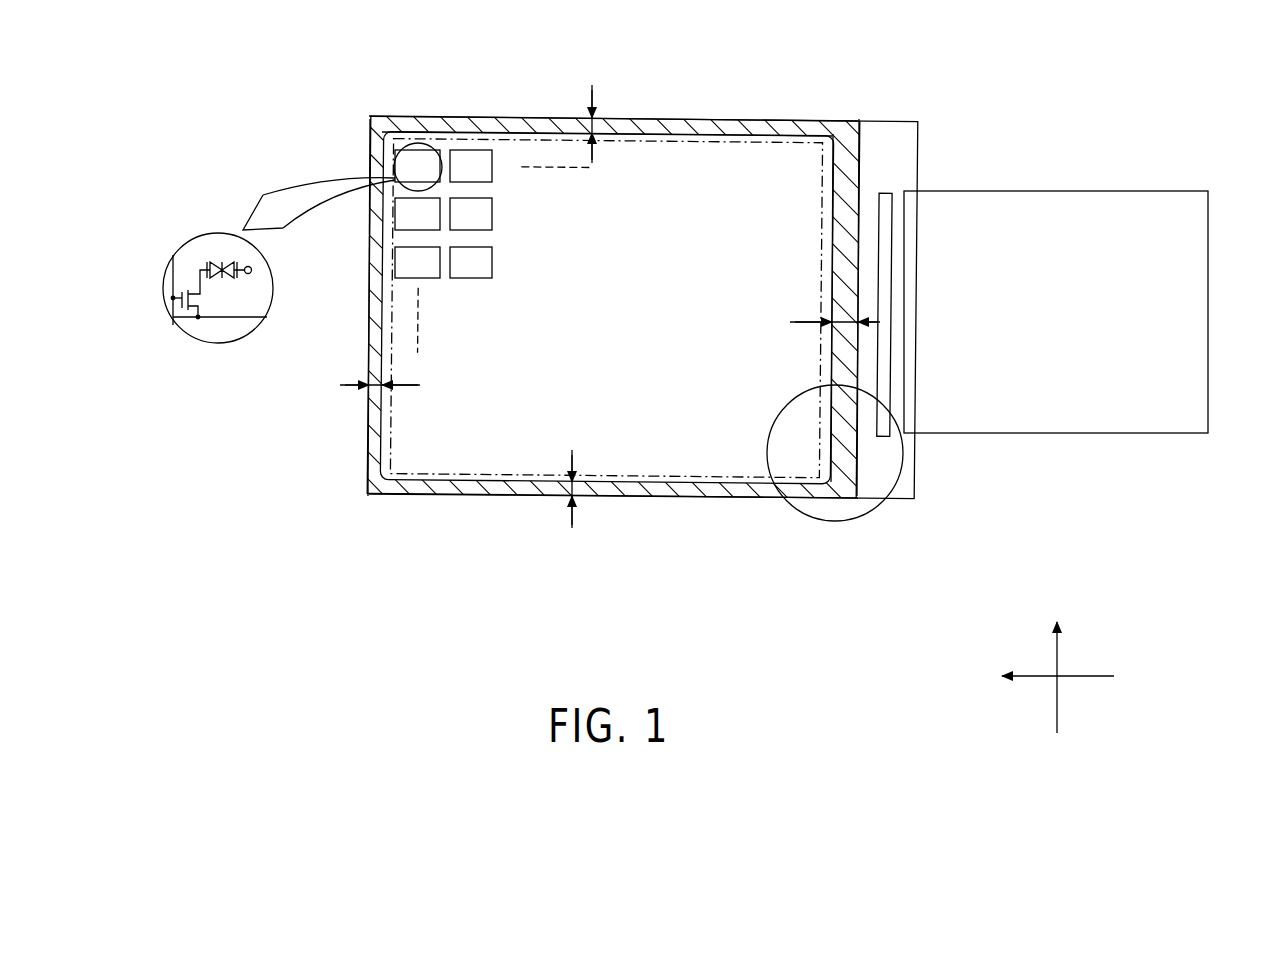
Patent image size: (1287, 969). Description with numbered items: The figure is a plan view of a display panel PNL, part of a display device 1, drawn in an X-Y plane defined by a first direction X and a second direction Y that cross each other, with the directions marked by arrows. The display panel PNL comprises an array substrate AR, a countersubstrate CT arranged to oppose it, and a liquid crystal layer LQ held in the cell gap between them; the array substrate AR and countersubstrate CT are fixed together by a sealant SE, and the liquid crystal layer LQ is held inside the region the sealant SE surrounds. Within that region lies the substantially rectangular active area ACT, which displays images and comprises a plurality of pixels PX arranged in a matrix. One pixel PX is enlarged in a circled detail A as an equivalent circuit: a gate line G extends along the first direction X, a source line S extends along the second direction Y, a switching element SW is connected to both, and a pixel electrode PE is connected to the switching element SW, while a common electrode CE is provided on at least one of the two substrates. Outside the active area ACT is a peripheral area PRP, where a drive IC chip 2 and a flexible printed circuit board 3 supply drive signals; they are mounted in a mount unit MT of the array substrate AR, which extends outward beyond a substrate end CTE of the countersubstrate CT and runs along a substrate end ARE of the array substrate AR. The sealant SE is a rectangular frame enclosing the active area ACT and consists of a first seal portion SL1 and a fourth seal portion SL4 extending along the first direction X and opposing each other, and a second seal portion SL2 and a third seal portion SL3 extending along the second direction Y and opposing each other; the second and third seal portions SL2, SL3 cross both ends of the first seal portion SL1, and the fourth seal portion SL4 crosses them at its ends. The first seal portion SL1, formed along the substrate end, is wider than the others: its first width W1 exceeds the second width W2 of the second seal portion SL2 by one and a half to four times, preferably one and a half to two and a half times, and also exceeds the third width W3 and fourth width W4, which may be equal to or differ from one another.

The display device 1 is at (1060, 66).
The display panel PNL is at (908, 115).
The substrate end of the array substrate ARE is at (920, 170).
The sealant SE is at (663, 119).
The third seal portion SL3 is at (713, 117).
The fourth seal portion SL4 is at (368, 470).
The second seal portion SL2 is at (628, 497).
The first seal portion SL1 is at (843, 372).
The substrate end of the countersubstrate CTE is at (862, 147).
The peripheral area PRP is at (823, 457).
The active area ACT is at (713, 478).
The countersubstrate CT is at (792, 462).
The pixel PX is at (412, 142).
The gate line G is at (173, 278).
The switching element SW is at (205, 297).
The source line S is at (227, 323).
The liquid crystal layer LQ is at (220, 257).
The pixel electrode PE is at (202, 262).
The common electrode CE is at (237, 280).
The third width W3 is at (588, 118).
The first width W1 is at (818, 322).
The fourth width W4 is at (377, 392).
The second width W2 is at (574, 478).
The drive IC chip 2 is at (886, 191).
The flexible printed circuit board 3 is at (1068, 190).
The mount unit MT is at (894, 436).
The region A is at (890, 512).
The array substrate AR is at (868, 485).
The first direction X is at (1056, 662).
The second direction Y is at (1046, 679).